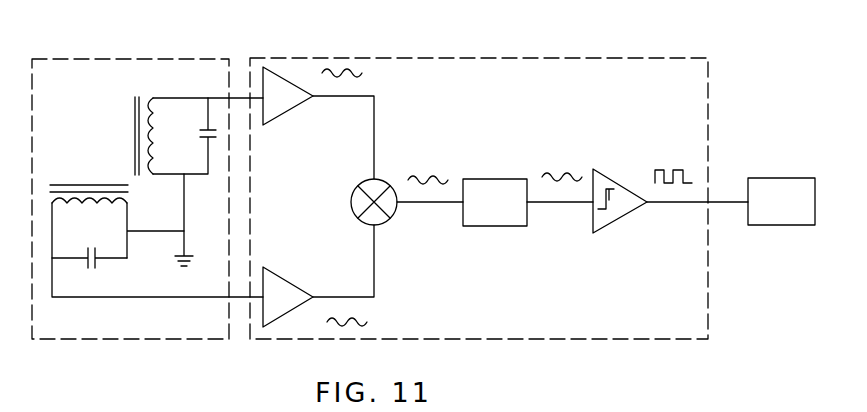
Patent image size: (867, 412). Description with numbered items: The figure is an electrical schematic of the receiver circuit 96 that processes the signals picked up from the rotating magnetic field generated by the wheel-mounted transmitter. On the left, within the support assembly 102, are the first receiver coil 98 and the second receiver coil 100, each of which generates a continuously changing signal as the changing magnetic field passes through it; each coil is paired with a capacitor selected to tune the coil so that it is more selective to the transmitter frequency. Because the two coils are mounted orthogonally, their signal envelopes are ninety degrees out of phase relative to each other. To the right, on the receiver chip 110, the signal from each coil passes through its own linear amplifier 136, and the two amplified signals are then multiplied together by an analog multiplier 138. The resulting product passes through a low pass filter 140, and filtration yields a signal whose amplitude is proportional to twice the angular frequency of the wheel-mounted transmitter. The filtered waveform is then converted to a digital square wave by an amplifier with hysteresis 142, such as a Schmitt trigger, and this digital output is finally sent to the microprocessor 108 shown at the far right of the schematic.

The receiver circuit 96 is at (627, 53).
The first receiver coil 98 is at (128, 200).
The second receiver coil 100 is at (150, 99).
The support assembly 102 is at (172, 339).
The microprocessor 108 is at (800, 213).
The receiver chip 110 is at (563, 339).
The linear amplifier 136 is at (285, 115).
The analog multiplier 138 is at (355, 190).
The low pass filter 140 is at (514, 213).
The amplifier with hysteresis 142 is at (612, 220).